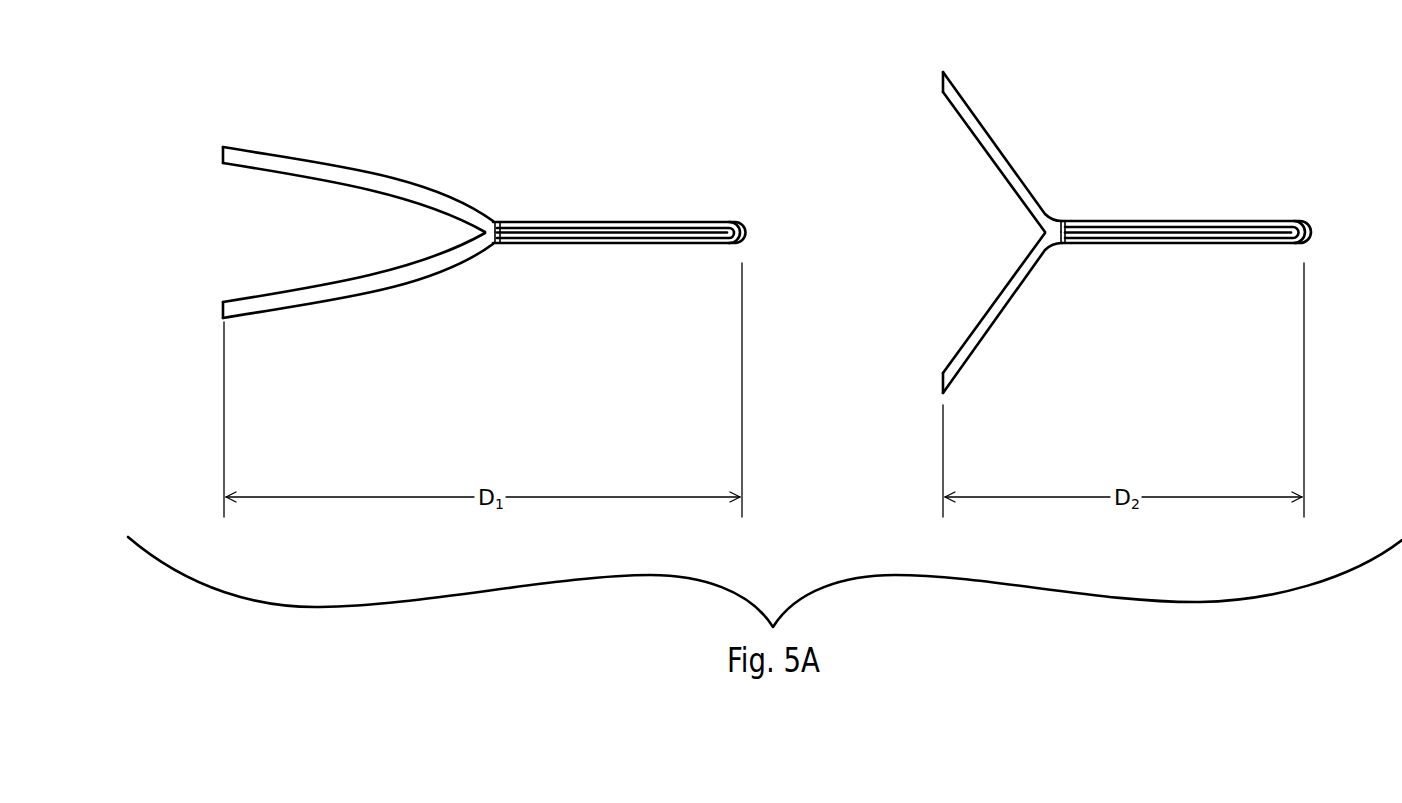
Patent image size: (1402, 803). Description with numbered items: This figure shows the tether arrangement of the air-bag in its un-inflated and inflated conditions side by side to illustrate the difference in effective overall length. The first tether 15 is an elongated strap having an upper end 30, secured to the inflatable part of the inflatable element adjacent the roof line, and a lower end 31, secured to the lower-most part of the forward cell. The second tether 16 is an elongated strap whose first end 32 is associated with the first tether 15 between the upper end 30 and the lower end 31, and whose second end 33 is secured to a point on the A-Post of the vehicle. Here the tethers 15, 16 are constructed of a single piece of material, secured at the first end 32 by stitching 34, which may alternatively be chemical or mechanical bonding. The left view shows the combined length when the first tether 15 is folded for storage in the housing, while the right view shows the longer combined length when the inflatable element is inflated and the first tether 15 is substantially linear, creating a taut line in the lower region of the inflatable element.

The first tether 15 is at (365, 173).
The second tether 16 is at (616, 244).
The upper end 30 is at (222, 152).
The lower end 31 is at (222, 308).
The first end 32 is at (517, 221).
The second end 33 is at (744, 232).
The stitching 34 is at (505, 244).